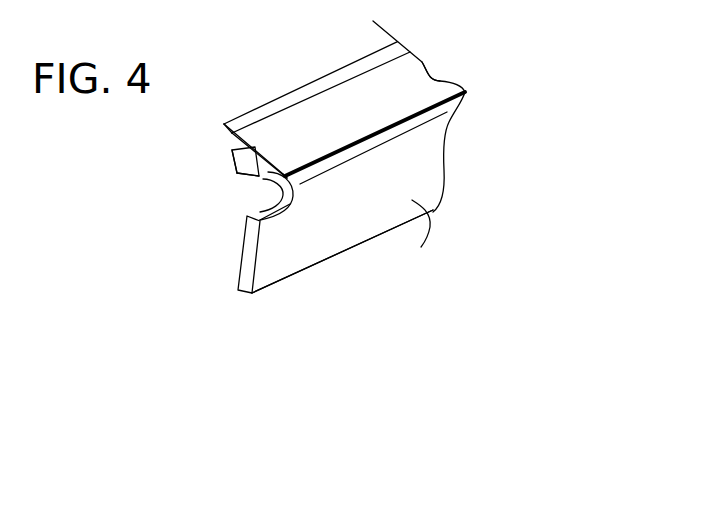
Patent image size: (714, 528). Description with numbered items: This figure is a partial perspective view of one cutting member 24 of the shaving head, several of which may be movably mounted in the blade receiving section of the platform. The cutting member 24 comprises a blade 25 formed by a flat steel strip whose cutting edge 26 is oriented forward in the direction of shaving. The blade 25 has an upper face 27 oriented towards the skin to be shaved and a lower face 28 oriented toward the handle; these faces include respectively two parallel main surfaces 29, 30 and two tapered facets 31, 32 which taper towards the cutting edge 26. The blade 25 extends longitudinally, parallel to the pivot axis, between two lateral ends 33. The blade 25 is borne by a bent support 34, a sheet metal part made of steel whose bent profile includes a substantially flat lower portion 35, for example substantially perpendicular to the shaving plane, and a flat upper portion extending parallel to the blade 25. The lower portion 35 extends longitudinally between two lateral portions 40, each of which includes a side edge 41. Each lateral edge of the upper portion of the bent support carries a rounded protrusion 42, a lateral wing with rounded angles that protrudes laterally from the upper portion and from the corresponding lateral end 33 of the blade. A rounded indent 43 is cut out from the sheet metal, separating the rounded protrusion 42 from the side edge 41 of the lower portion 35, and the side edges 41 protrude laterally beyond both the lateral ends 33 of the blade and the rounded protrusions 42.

The cutting member 24 is at (524, 144).
The blade 25 is at (472, 93).
The cutting edge 26 is at (242, 117).
The upper face 27 is at (410, 68).
The lower face 28 is at (250, 176).
The main surface 29 is at (433, 84).
The main surface 30 is at (262, 181).
The tapered facet 31 is at (295, 97).
The tapered facet 32 is at (230, 135).
The lateral end 33 is at (233, 148).
The bent support 34 is at (455, 182).
The lower portion 35 is at (430, 222).
The lateral portion 40 is at (285, 292).
The side edge 41 is at (247, 262).
The rounded protrusion 42 is at (231, 158).
The rounded indent 43 is at (290, 203).